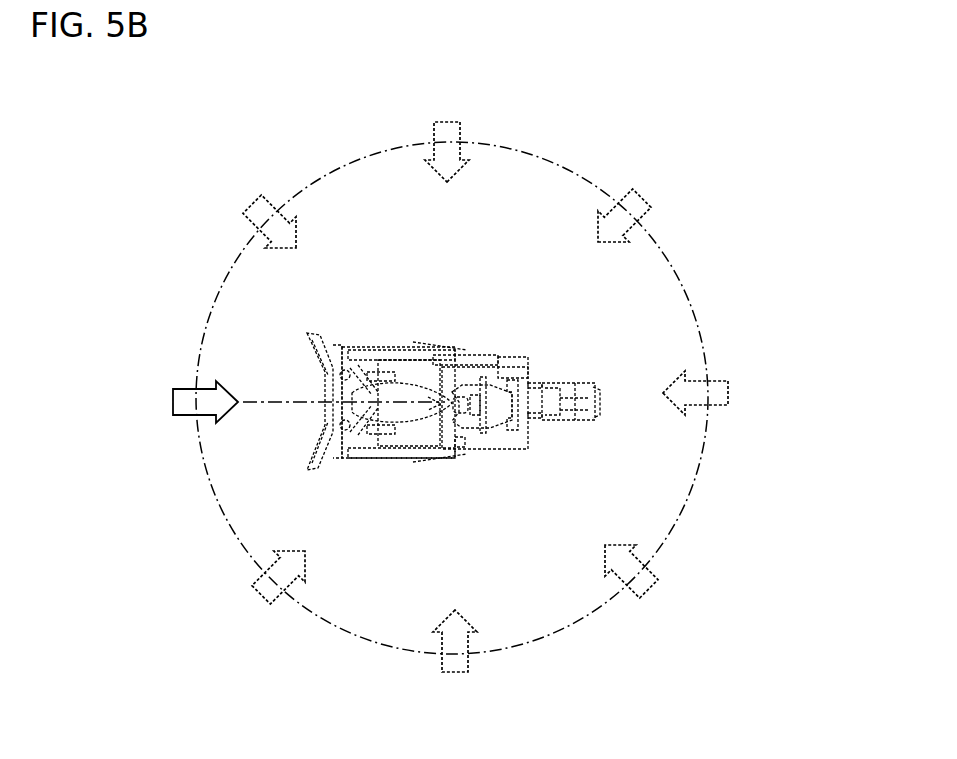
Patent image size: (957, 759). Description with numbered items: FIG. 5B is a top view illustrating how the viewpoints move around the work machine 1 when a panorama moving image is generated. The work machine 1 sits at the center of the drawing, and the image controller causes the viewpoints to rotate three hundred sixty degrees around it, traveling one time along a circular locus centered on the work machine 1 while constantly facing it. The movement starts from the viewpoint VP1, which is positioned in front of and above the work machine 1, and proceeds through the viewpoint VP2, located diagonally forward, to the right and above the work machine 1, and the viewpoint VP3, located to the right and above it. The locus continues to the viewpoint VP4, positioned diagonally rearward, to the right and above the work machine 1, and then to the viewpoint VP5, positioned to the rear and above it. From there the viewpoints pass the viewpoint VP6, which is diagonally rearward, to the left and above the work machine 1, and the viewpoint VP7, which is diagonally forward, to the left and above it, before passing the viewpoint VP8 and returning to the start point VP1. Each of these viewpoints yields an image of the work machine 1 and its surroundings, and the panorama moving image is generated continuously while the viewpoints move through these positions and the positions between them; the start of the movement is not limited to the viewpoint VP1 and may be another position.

The work machine 1 is at (275, 330).
The viewpoint VP1 is at (193, 435).
The viewpoint VP2 is at (250, 216).
The viewpoint VP3 is at (456, 129).
The viewpoint VP4 is at (650, 206).
The viewpoint VP5 is at (732, 393).
The viewpoint VP6 is at (653, 578).
The viewpoint VP7 is at (468, 664).
The viewpoint VP8 is at (264, 588).